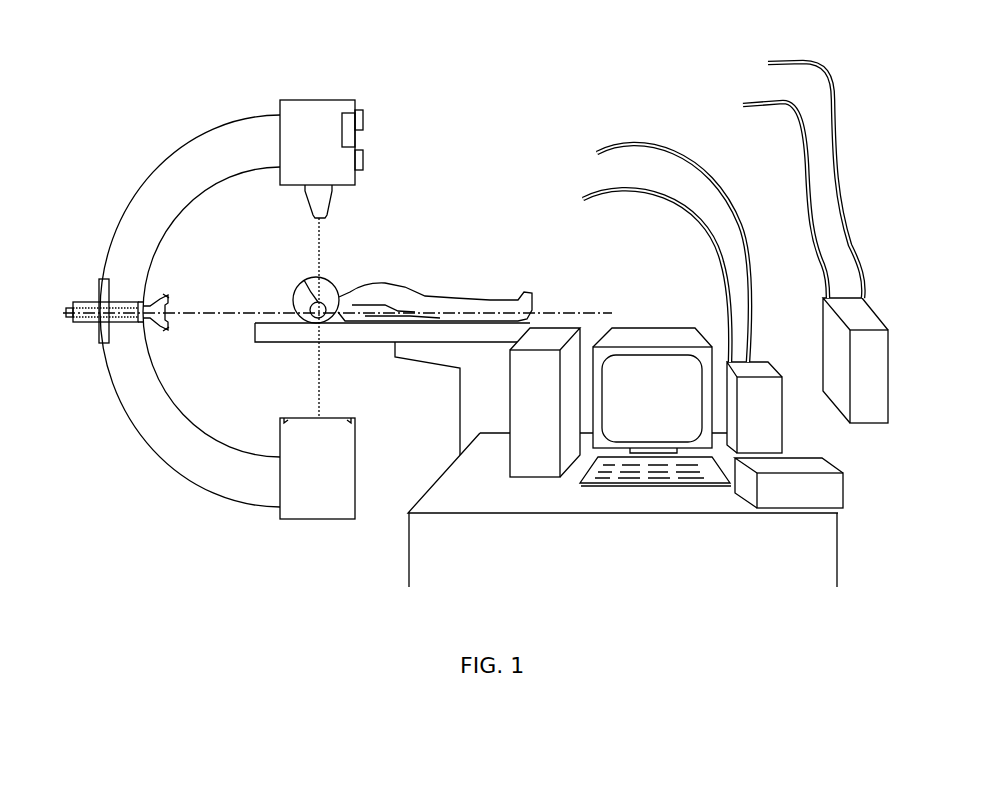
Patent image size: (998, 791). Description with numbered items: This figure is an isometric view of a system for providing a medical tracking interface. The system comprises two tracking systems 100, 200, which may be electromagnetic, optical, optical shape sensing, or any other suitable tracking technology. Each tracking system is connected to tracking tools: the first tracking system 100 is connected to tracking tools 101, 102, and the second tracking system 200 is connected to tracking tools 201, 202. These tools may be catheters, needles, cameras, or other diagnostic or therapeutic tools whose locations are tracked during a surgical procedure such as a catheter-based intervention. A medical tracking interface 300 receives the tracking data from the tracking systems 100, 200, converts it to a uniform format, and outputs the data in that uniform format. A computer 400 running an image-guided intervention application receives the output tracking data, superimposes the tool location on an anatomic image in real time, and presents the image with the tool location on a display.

The tracking system 100 is at (782, 440).
The tracking tool 101 is at (600, 110).
The tracking tool 102 is at (570, 145).
The tracking system 200 is at (890, 352).
The tracking tool 201 is at (855, 167).
The tracking tool 202 is at (749, 81).
The medical tracking interface 300 is at (838, 498).
The computer 400 is at (543, 277).